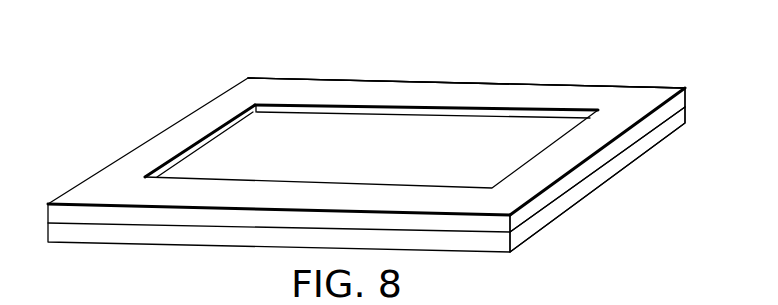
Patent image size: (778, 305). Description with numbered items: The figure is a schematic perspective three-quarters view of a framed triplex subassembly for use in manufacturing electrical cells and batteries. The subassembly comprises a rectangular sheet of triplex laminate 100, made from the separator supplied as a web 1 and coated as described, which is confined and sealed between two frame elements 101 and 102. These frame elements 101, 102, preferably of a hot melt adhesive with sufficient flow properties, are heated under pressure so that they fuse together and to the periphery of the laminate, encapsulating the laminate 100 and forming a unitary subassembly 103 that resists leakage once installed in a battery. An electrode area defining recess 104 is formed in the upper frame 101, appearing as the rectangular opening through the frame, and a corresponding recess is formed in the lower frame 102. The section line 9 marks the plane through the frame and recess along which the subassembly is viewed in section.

The web 1 is at (295, 92).
The section line 9- 9 is at (220, 140).
The triplex laminate sheet 100 is at (480, 145).
The frame element 101 is at (637, 95).
The frame element 102 is at (608, 180).
The unitary subassembly 103 is at (447, 72).
The electrode area defining recess 104 is at (227, 128).